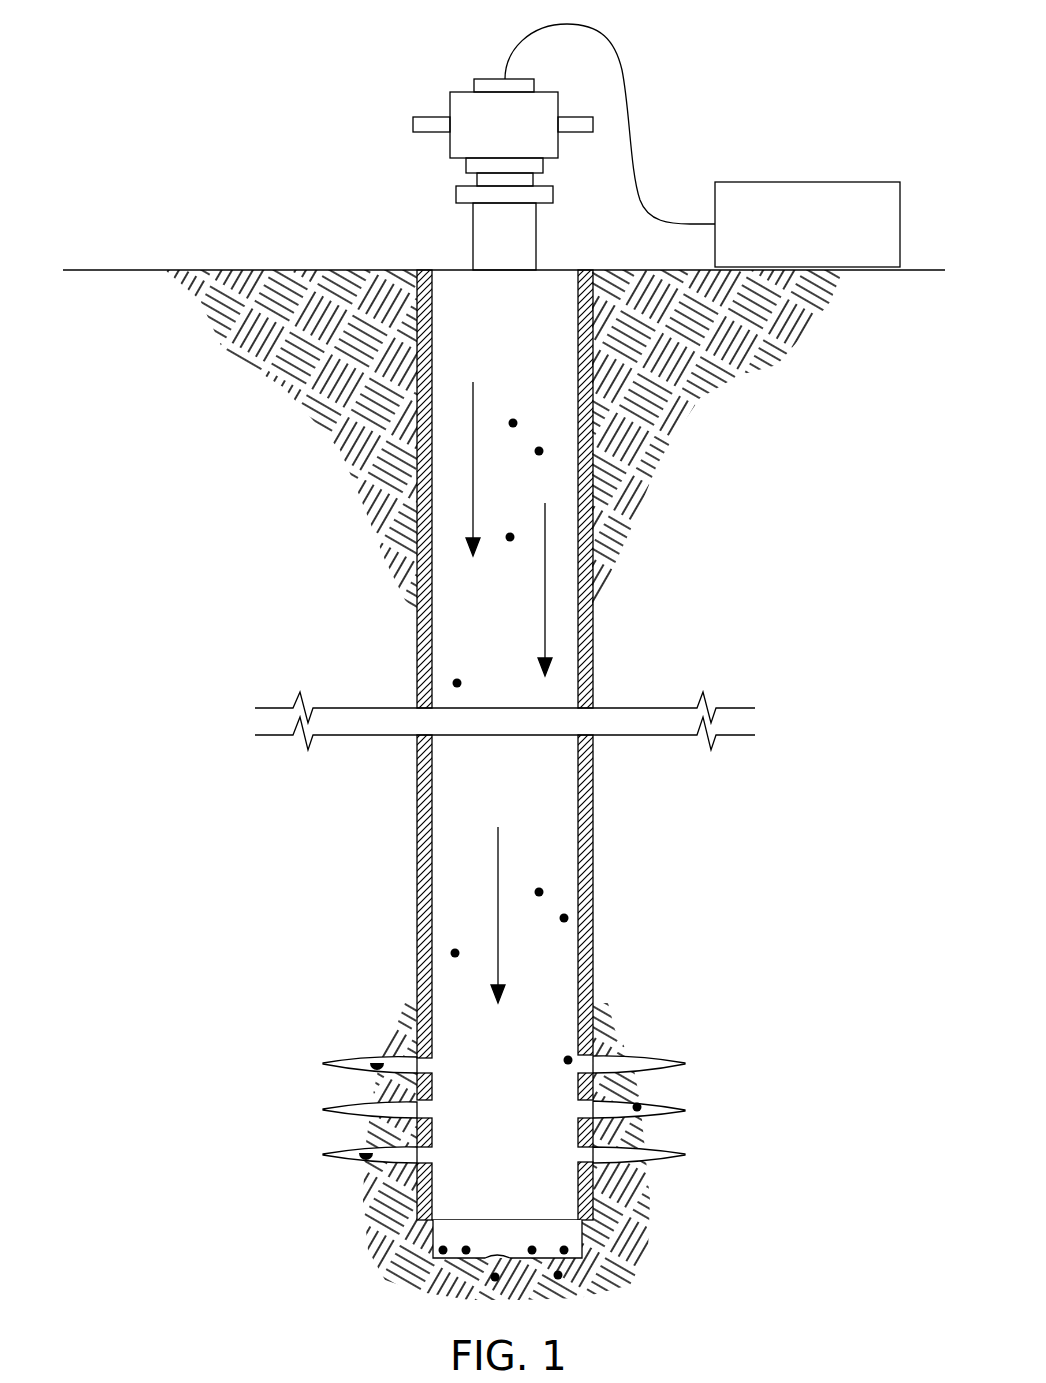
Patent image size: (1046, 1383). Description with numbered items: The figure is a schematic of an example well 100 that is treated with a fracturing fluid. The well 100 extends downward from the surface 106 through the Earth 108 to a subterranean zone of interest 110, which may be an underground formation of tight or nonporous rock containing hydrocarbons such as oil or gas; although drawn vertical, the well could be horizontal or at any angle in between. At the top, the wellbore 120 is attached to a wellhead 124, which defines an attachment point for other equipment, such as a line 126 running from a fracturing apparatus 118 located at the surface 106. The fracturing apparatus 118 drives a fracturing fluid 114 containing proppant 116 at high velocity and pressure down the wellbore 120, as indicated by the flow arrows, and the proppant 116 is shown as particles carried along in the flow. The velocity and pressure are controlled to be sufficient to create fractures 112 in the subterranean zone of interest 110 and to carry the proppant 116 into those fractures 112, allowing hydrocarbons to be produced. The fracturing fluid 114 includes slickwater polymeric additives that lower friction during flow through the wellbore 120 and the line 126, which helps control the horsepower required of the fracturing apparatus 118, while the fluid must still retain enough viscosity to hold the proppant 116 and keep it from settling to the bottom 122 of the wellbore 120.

The well 100 is at (334, 161).
The surface 106 is at (132, 270).
The Earth 108 is at (297, 483).
The subterranean zone of interest 110 is at (788, 1055).
The fractures 112 is at (347, 1062).
The fracturing fluid 114 is at (562, 618).
The proppant 116 is at (545, 890).
The fracturing apparatus 118 is at (815, 182).
The wellbore 120 is at (417, 666).
The bottom 122 is at (507, 1258).
The wellhead 124 is at (461, 91).
The line 126 is at (590, 24).